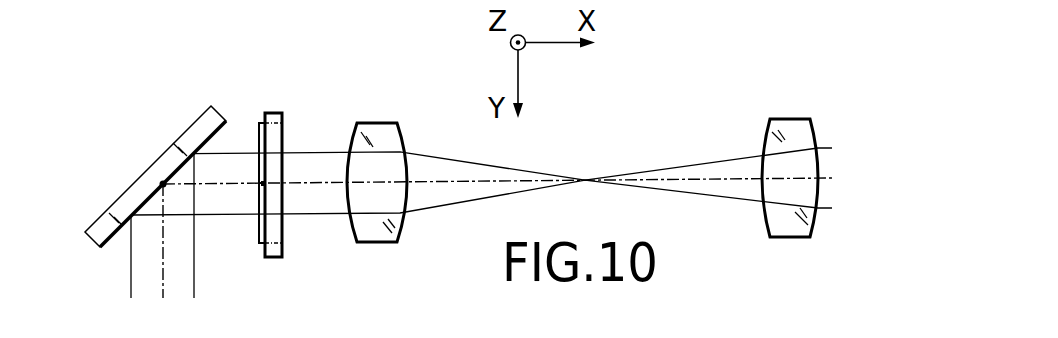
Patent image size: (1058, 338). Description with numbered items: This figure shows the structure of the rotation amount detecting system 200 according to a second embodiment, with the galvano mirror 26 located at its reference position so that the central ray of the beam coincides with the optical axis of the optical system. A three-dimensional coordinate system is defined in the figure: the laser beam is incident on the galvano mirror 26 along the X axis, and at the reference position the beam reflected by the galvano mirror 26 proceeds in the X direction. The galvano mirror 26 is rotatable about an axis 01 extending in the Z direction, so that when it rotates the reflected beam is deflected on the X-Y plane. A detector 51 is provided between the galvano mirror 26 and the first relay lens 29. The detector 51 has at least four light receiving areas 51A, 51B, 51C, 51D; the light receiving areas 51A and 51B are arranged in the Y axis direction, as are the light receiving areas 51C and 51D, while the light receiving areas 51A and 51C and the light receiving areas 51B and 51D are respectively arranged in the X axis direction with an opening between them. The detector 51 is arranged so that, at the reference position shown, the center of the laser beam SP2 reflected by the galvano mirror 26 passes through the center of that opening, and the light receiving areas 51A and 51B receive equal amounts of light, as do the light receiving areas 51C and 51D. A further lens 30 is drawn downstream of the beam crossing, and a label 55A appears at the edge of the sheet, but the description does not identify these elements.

The rotation amount detecting system 200 is at (349, 67).
The laser beam SP2 is at (218, 216).
The galvano mirror 26 is at (117, 201).
The axis 01 is at (149, 171).
The detector 51 is at (273, 112).
The light receiving area 51A is at (184, 123).
The light receiving area 51C is at (259, 127).
The light receiving area 51B is at (285, 258).
The light receiving area 51D is at (263, 243).
The first relay lens 29 is at (375, 122).
The collimator lens 30 is at (785, 119).
The element (partially visible) 55A is at (448, 332).